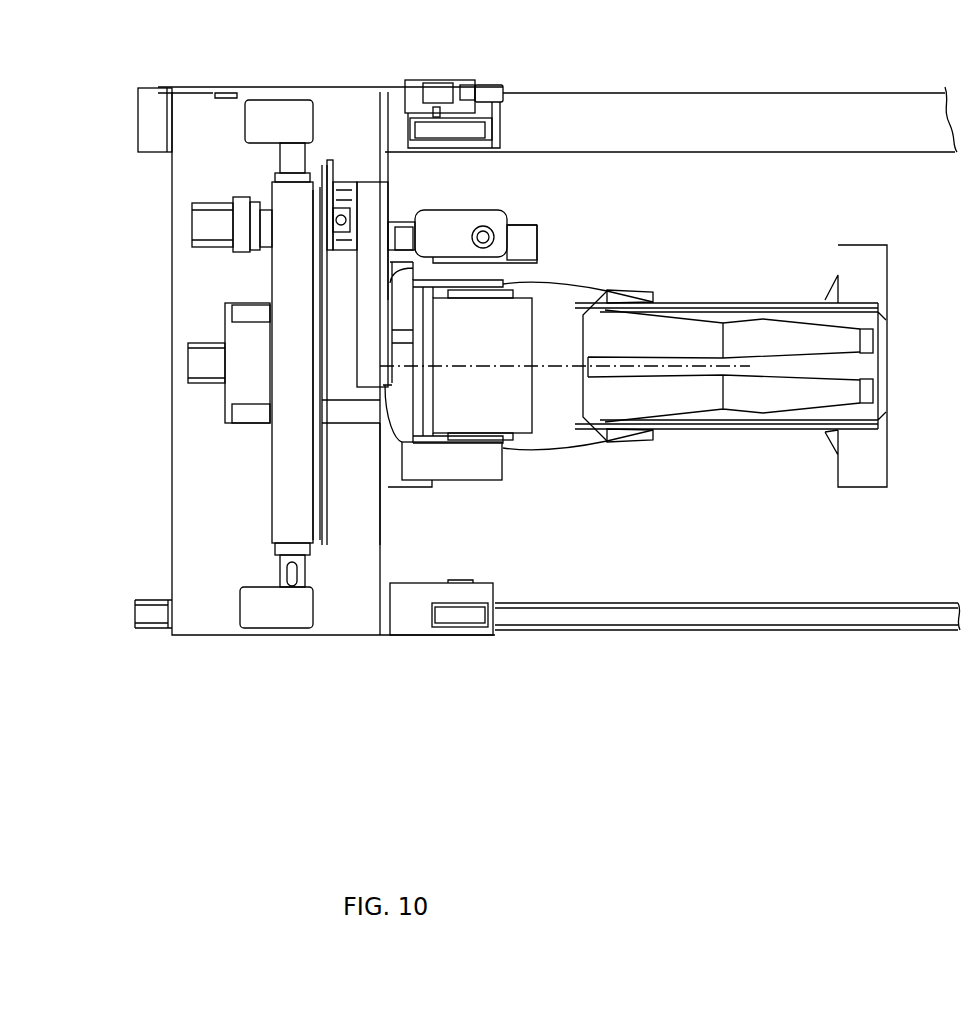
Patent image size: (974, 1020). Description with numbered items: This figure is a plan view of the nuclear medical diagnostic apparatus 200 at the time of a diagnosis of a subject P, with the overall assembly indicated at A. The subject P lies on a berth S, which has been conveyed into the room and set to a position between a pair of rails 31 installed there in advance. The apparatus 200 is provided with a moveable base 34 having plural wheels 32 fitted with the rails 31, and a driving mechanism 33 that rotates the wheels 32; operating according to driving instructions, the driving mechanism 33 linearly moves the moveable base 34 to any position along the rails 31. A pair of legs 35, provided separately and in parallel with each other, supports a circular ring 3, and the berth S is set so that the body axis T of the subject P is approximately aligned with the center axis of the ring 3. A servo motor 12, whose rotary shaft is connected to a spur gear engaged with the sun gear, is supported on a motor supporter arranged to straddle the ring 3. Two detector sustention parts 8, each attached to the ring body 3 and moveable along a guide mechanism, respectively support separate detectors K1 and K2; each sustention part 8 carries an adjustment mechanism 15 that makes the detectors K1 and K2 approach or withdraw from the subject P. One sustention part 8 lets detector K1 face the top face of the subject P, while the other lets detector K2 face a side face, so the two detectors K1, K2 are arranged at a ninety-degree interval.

The tool post assembly A is at (338, 72).
The apparatus 200 is at (424, 795).
The ring 3 is at (278, 461).
The detector sustention part 8 is at (517, 214).
The servo motor 12 is at (203, 203).
The adjustment mechanism 15 is at (345, 172).
The rails 31 is at (717, 148).
The wheels 32 is at (477, 130).
The driving mechanism 33 is at (412, 80).
The moveable base 34 is at (379, 533).
The legs 35 is at (290, 112).
The detector K1 is at (533, 383).
The detector K2 is at (538, 248).
The body axis T is at (480, 367).
The subject P is at (565, 450).
The berth S is at (878, 463).